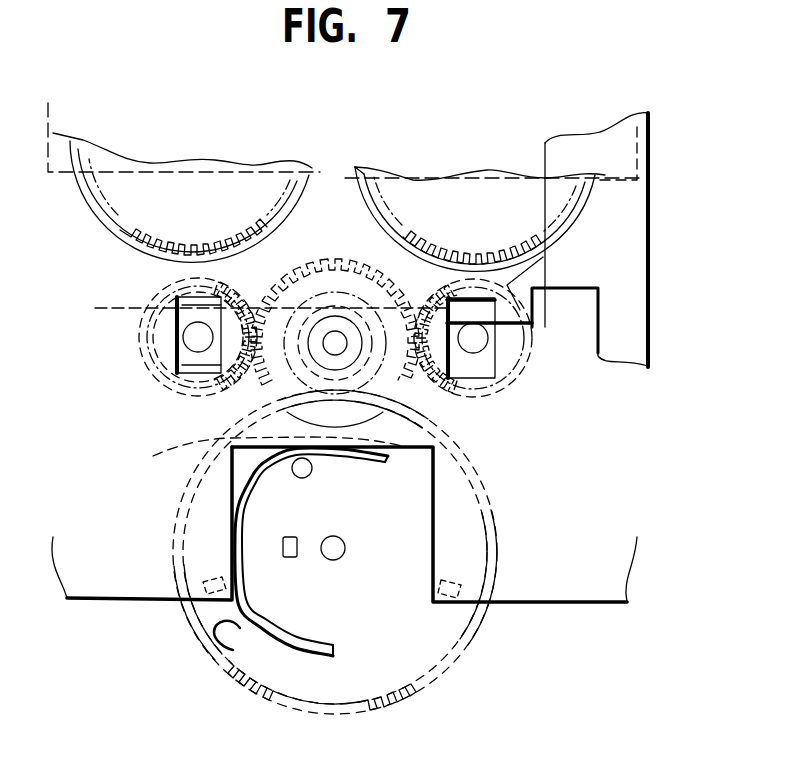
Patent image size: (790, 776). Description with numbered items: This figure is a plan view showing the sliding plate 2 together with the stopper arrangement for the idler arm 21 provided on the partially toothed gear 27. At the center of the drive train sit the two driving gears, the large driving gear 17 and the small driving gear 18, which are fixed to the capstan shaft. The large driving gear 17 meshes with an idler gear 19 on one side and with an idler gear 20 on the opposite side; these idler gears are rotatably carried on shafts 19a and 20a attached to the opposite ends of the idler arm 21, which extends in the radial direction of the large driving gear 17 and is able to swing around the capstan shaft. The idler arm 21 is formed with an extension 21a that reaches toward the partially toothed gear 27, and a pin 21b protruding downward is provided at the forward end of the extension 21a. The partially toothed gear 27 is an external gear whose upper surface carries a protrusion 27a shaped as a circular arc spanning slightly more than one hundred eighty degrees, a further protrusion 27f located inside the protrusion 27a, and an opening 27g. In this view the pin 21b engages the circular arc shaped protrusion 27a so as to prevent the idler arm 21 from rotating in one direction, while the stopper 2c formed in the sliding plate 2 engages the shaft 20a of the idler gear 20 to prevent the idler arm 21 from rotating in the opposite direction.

The sliding plate 2 is at (633, 243).
The stopper 2c is at (500, 330).
The large driving gear 17 is at (413, 244).
The small driving gear 18 is at (318, 302).
The idler gear 19 is at (147, 303).
The shaft 19a is at (196, 337).
The idler gear 20 is at (447, 298).
The shaft 20a is at (480, 352).
The idler arm 21 is at (455, 440).
The extension 21a is at (255, 456).
The pin 21b is at (297, 480).
The partially toothed gear 27 is at (356, 692).
The protrusion 27a is at (285, 650).
The protrusion 27f is at (297, 560).
The opening 27g is at (218, 636).